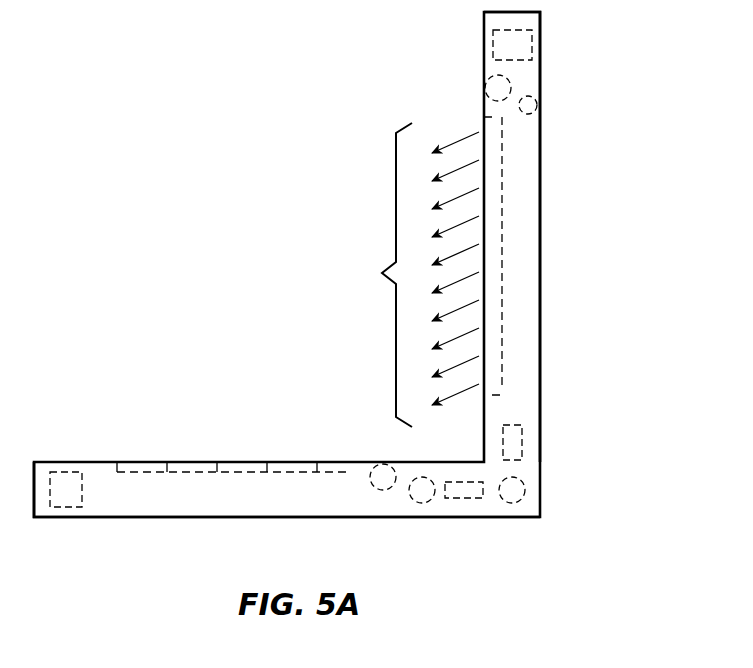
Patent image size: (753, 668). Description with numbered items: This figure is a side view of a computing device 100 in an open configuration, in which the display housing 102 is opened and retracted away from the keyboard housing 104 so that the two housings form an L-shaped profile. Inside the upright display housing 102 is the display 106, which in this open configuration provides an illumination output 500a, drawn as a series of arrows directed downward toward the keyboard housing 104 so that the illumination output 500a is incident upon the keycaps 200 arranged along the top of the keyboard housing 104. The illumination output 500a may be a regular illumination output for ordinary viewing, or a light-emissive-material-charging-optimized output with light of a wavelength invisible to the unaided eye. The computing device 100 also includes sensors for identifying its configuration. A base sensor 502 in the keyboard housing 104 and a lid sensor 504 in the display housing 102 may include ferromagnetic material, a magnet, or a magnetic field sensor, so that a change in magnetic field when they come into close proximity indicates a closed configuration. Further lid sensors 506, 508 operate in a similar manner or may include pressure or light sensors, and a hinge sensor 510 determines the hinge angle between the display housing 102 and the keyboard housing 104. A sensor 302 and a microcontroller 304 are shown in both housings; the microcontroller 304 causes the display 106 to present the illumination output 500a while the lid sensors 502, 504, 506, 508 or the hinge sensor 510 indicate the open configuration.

The computing device 100 is at (150, 200).
The display housing 102 is at (533, 333).
The keyboard housing 104 is at (157, 512).
The display 106 is at (497, 243).
The keycaps 200 is at (185, 452).
The sensor 302 is at (493, 85).
The microcontroller 304 is at (535, 100).
The illumination output 500a is at (400, 275).
The base sensor 502 is at (62, 470).
The lid sensor 504 is at (525, 45).
The lid sensor 506 is at (475, 497).
The lid sensor 508 is at (515, 440).
The hinge sensor 510 is at (515, 485).